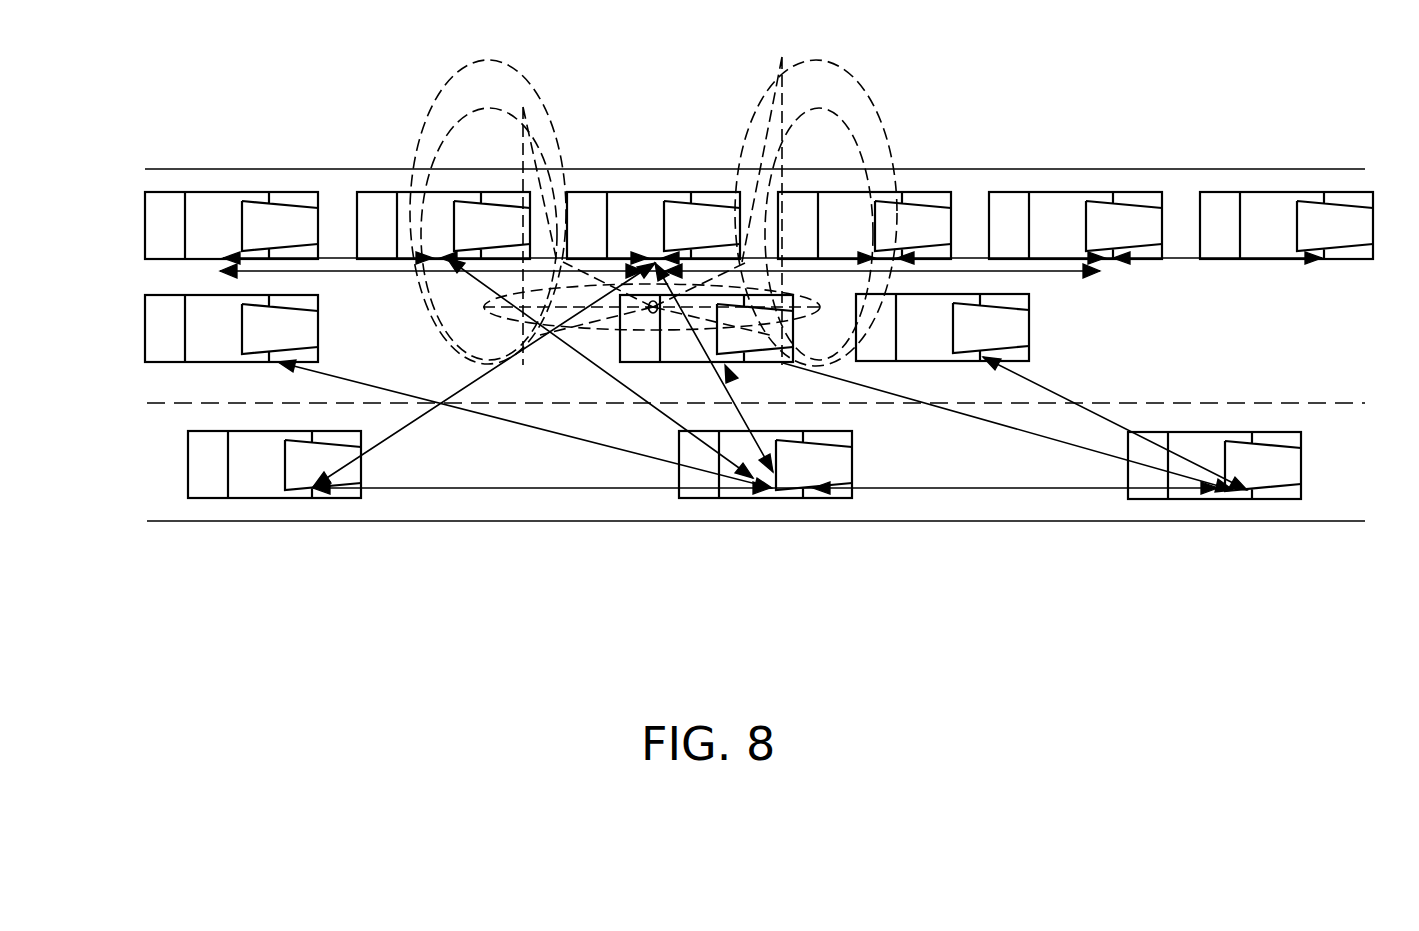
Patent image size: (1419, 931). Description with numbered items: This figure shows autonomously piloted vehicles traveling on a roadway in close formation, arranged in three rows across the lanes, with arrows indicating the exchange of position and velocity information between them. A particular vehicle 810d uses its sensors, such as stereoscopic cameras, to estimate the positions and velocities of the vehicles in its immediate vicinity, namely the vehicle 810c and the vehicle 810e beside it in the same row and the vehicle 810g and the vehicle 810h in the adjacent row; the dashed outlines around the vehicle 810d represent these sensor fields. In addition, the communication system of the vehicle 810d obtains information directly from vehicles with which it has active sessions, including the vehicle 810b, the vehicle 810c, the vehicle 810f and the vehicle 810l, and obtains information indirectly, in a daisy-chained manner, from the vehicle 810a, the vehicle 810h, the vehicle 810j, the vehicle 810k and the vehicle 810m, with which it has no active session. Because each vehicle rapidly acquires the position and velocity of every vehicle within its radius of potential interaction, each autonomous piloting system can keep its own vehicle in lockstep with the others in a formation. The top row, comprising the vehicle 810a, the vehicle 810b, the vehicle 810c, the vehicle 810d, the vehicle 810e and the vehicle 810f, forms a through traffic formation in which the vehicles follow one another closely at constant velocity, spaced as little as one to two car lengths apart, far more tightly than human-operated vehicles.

The vehicle 810a is at (1264, 210).
The vehicle 810b is at (1050, 210).
The vehicle 810c is at (927, 210).
The vehicle 810d is at (638, 213).
The vehicle 810e is at (375, 210).
The vehicle 810f is at (212, 212).
The vehicle 810g is at (641, 345).
The vehicle 810h is at (928, 338).
The vehicle 810j is at (708, 485).
The vehicle 810k is at (1152, 478).
The vehicle 810l is at (262, 480).
The vehicle 810m is at (192, 335).